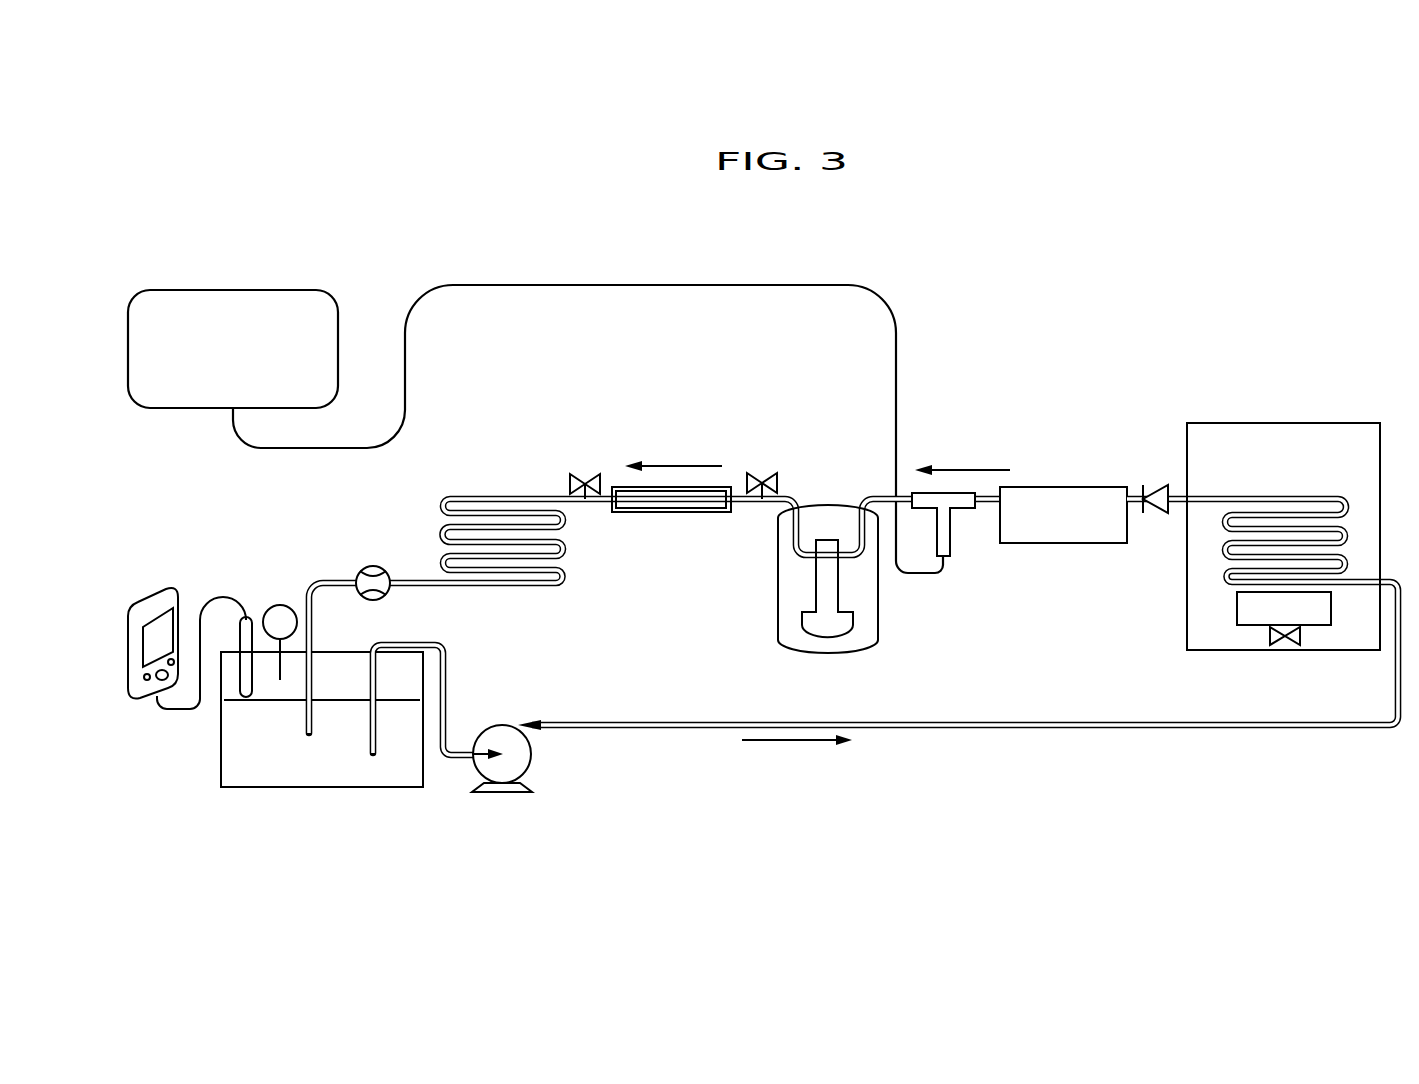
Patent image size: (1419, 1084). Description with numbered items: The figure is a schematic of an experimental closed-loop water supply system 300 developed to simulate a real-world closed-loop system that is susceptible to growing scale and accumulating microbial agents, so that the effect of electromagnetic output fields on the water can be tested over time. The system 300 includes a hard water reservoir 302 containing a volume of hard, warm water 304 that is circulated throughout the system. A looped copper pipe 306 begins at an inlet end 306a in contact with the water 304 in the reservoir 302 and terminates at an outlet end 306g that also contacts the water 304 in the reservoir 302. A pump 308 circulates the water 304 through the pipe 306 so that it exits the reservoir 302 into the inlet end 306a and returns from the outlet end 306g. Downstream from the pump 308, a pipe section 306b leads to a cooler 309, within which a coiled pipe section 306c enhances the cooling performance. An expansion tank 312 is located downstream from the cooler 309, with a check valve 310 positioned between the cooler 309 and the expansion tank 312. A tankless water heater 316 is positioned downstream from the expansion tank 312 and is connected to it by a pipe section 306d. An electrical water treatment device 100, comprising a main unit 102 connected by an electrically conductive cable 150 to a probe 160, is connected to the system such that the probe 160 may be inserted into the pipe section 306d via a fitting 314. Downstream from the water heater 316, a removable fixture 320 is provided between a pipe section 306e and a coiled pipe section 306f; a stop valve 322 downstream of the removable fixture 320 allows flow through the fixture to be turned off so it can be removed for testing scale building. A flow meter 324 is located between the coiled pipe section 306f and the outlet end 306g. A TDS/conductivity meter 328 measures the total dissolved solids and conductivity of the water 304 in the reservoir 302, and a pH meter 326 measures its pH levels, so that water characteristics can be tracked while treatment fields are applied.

The experimental closed-loop water supply system 300 is at (231, 186).
The electrical water treatment device 100 is at (371, 283).
The main unit 102 is at (234, 290).
The electrically conductive cable 150 is at (557, 285).
The probe 160 is at (951, 553).
The hard water reservoir 302 is at (410, 789).
The hard water 304 is at (269, 741).
The looped copper pipe 306 is at (982, 737).
The inlet end 306a is at (372, 749).
The pipe section 306b is at (1097, 728).
The coiled pipe section 306c is at (1228, 566).
The pipe section 306d is at (862, 499).
The pipe section 306e is at (775, 507).
The coiled pipe section 306f is at (440, 499).
The outlet end 306g is at (316, 625).
The pump 308 is at (532, 760).
The cooler 309 is at (1226, 423).
The check valve 310 is at (1146, 486).
The expansion tank 312 is at (1066, 487).
The fitting 314 is at (913, 492).
The tankless water heater 316 is at (878, 628).
The removable fixture 320 is at (733, 487).
The stop valve 322 is at (569, 487).
The flow meter 324 is at (388, 575).
The pH meter 326 is at (281, 605).
The TDS/conductivity meter 328 is at (184, 600).